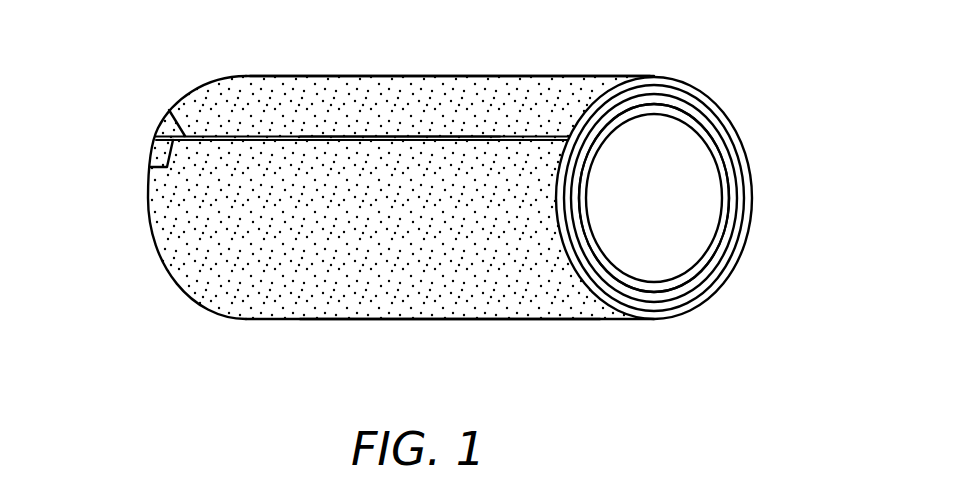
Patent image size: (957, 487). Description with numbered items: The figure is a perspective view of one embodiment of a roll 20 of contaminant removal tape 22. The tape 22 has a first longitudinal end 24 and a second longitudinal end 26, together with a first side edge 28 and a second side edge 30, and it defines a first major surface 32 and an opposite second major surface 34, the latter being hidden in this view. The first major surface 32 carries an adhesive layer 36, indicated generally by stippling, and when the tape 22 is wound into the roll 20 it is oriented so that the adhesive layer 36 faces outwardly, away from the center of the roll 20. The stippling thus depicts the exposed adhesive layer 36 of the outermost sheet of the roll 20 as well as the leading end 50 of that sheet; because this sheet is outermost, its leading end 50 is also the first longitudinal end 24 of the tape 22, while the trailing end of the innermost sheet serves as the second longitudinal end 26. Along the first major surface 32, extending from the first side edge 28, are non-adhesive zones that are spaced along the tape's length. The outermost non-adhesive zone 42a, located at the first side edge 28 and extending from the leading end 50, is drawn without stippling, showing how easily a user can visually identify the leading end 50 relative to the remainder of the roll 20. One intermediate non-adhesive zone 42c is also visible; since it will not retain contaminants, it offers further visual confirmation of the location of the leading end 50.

The roll 20 is at (700, 72).
The contaminant removal tape 22 is at (290, 83).
The first longitudinal end 24 is at (508, 140).
The second longitudinal end 26 is at (597, 150).
The first side edge 28 is at (152, 243).
The second side edge 30 is at (750, 177).
The first major surface 32 is at (251, 296).
The second major surface 34 is at (682, 218).
The adhesive layer 36 is at (472, 291).
The outermost non-adhesive zone 42a is at (167, 120).
The intermediate non-adhesive zone 42c is at (152, 157).
The leading end 50 is at (417, 137).